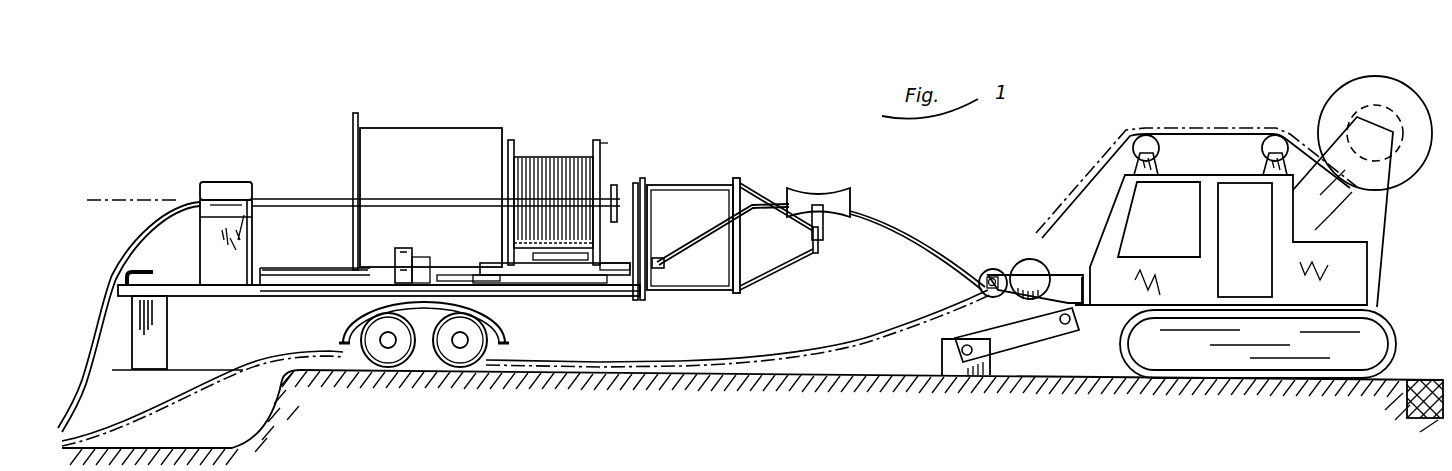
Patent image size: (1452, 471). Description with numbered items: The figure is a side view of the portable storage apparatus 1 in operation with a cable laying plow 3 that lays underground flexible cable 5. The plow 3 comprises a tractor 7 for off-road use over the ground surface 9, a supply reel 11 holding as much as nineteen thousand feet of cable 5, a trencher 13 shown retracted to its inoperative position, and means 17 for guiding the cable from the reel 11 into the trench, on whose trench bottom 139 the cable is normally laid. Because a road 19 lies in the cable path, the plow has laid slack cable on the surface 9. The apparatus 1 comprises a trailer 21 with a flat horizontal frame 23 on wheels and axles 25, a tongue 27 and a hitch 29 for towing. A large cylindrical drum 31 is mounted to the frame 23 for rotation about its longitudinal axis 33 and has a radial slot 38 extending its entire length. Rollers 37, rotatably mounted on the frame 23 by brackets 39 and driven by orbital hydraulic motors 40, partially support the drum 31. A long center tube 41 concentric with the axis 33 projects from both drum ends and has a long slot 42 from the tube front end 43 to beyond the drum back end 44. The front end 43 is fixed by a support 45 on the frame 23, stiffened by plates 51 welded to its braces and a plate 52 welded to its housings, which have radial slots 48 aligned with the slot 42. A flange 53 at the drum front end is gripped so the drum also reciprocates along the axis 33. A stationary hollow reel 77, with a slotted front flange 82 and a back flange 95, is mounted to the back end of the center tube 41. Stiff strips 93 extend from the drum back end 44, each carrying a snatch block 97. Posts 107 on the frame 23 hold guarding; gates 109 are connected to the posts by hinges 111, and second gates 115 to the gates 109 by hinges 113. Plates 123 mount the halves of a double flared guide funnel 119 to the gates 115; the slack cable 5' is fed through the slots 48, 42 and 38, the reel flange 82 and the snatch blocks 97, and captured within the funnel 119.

The portable storage apparatus 1 is at (466, 78).
The plow 3 is at (1381, 295).
The flexible cable 5 is at (526, 365).
The cable 5' is at (521, 293).
The tractor 7 is at (1401, 342).
The ground surface 9 is at (130, 362).
The supply reel 11 is at (1394, 90).
The earth trenching device 13 is at (1045, 325).
The means for guiding the cable 17 is at (993, 268).
The road 19 is at (1410, 418).
The trailer 21 is at (519, 300).
The flat horizontal frame 23 is at (572, 298).
The wheels and axles 25 is at (461, 368).
The tongue 27 is at (194, 297).
The hitch 29 is at (148, 271).
The cylindrical drum 31 is at (417, 135).
The longitudinal axis 33 is at (114, 200).
The rollers 37 is at (404, 248).
The radial slot 38 is at (429, 200).
The brackets 39 is at (340, 281).
The orbital hydraulic motors 40 is at (414, 258).
The center tube 41 is at (334, 197).
The long slot 42 is at (282, 226).
The tube front end 43 is at (273, 215).
The drum back end 44 is at (512, 140).
The support 45 is at (256, 253).
The radial slots 48 is at (218, 182).
The plates 51 is at (222, 240).
The plate 52 is at (246, 182).
The flange 53 is at (356, 120).
The stationary hollow reel 77 is at (607, 136).
The front flange 82 is at (517, 146).
The stiff strips 93 is at (601, 268).
The back flange 95 is at (601, 141).
The snatch blocks 97 is at (665, 268).
The posts 107 is at (636, 183).
The gates 109 is at (715, 292).
The hinges 111 is at (644, 178).
The hinges 113 is at (737, 180).
The second gates 115 is at (785, 260).
The double flared guide funnel 119 is at (824, 188).
The plates 123 is at (827, 218).
The trench bottom 139 is at (241, 447).